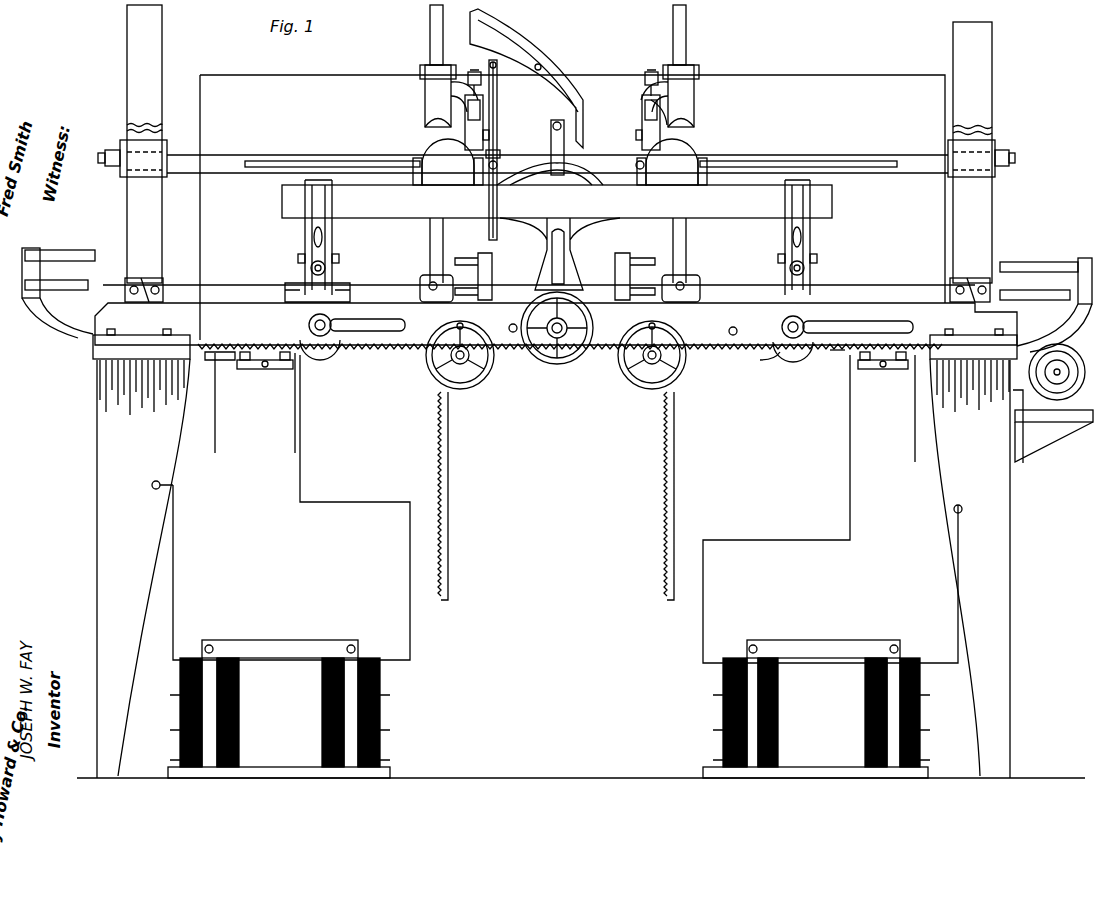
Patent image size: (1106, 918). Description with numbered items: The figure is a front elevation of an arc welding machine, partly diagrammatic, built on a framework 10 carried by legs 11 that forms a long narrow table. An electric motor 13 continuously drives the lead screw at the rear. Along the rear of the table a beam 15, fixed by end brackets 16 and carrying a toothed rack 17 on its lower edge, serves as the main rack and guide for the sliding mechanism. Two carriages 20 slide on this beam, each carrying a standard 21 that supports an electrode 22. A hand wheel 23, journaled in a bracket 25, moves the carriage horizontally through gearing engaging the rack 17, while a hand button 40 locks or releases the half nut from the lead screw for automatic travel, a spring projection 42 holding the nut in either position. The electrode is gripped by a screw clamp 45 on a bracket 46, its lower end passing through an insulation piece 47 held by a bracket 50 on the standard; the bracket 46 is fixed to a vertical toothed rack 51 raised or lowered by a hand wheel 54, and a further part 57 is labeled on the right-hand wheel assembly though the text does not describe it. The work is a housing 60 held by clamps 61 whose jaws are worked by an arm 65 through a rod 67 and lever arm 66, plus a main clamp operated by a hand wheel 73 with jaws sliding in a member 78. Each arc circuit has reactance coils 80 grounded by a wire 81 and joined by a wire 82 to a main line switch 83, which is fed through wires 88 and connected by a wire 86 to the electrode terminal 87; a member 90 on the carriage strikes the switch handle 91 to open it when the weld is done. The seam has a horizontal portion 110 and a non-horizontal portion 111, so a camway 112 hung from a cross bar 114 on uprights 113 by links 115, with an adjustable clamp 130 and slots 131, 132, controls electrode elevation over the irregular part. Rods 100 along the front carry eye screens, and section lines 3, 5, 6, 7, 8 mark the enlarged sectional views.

The section line 3— 3 is at (795, 173).
The section line 5— 5 is at (465, 252).
The section line 6— 6 is at (557, 160).
The section line 7— 7 is at (100, 15).
The section line 8— 8 is at (638, 22).
The framework 10 is at (884, 360).
The legs 11 is at (960, 484).
The electric motor 13 is at (1060, 395).
The beam 15 is at (907, 294).
The end brackets 16 is at (160, 279).
The toothed rack 17 is at (840, 352).
The carriage 20 is at (703, 290).
The standard 21 is at (684, 240).
The electrode 22 is at (496, 164).
The hand wheel 23 is at (489, 388).
The bracket 25 is at (215, 359).
The hand button 40 is at (441, 388).
The projection 42 is at (290, 293).
The screw clamp 45 is at (484, 132).
The bracket 46 is at (448, 84).
The insulation piece 47 is at (566, 150).
The bracket 50 is at (440, 148).
The toothed rack 51 is at (672, 130).
The hand wheel 54 is at (500, 370).
The wheel rim 57 is at (692, 370).
The housing 60 is at (742, 187).
The clamps 61 is at (312, 198).
The arm 65 is at (886, 358).
The arm 66 is at (372, 350).
The rod 67 is at (773, 365).
The hand wheel 73 is at (574, 362).
The member 78 is at (583, 288).
The reactance coils 80 is at (342, 648).
The wire 81 is at (176, 526).
The wire 82 is at (410, 552).
The main line switch 83 is at (247, 372).
The wire 86 is at (843, 86).
The terminal 87 is at (485, 78).
The wires 88 is at (295, 440).
The member 90 is at (376, 372).
The handle 91 is at (265, 372).
The rods 100 is at (78, 264).
The horizontal portion 110 is at (398, 186).
The non-horizontal portion 111 is at (532, 184).
The camway 112 is at (540, 72).
The uprights 113 is at (159, 203).
The cross bar 114 is at (933, 172).
The links 115 is at (501, 138).
The adjustable clamp 130 is at (997, 155).
The slots 131 is at (497, 106).
The slots 132 is at (333, 165).